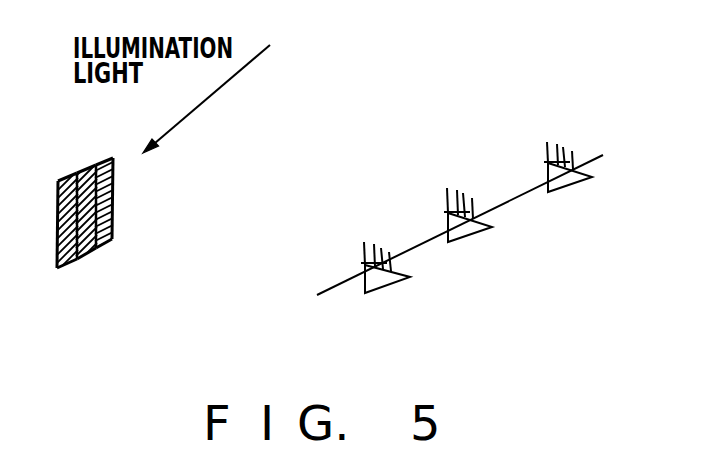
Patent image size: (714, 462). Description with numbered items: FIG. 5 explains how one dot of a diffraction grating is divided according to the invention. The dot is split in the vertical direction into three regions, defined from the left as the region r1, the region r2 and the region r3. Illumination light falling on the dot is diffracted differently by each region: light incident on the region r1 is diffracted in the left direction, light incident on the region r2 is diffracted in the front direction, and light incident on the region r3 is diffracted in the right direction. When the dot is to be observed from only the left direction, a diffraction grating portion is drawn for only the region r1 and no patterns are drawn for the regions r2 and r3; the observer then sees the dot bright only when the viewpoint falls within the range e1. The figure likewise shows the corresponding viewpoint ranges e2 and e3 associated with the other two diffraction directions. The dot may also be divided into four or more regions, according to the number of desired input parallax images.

The region r1 is at (65, 223).
The region r2 is at (85, 213).
The region r3 is at (106, 193).
The range e1 is at (385, 282).
The second light-receiving element e2 is at (468, 230).
The third light-receiving element e3 is at (568, 179).